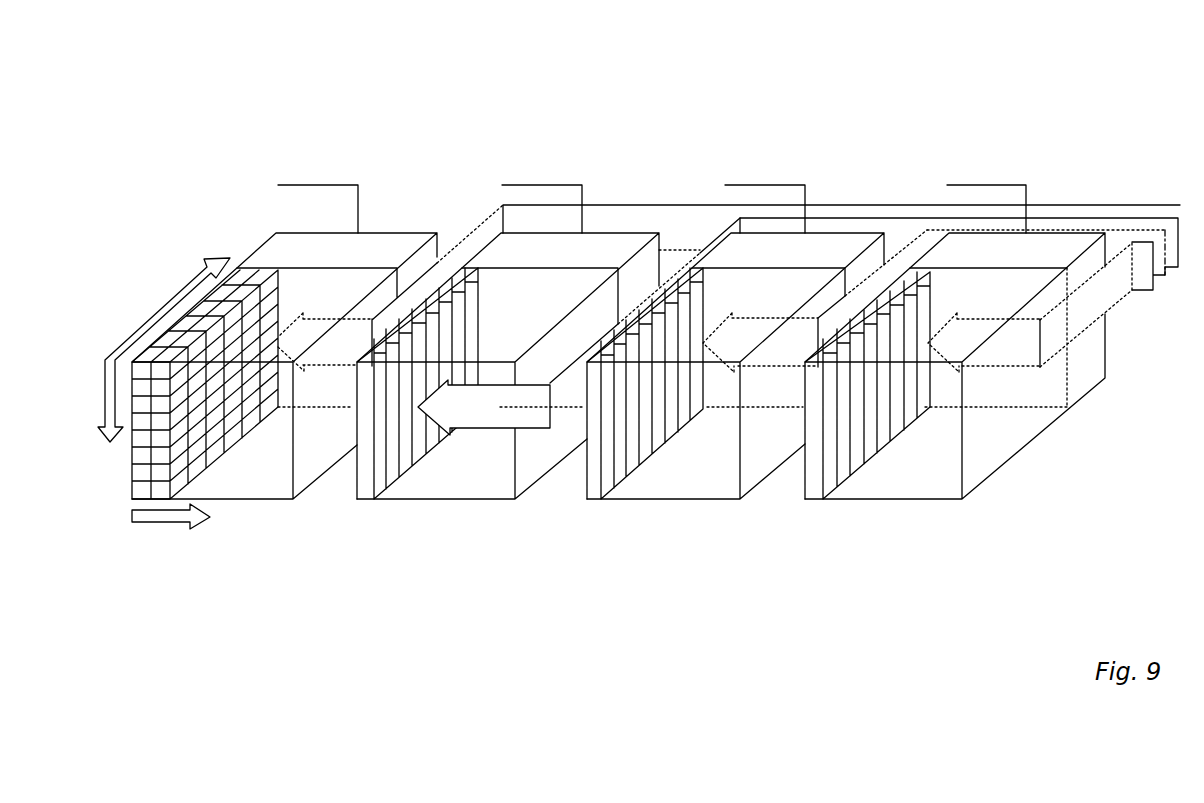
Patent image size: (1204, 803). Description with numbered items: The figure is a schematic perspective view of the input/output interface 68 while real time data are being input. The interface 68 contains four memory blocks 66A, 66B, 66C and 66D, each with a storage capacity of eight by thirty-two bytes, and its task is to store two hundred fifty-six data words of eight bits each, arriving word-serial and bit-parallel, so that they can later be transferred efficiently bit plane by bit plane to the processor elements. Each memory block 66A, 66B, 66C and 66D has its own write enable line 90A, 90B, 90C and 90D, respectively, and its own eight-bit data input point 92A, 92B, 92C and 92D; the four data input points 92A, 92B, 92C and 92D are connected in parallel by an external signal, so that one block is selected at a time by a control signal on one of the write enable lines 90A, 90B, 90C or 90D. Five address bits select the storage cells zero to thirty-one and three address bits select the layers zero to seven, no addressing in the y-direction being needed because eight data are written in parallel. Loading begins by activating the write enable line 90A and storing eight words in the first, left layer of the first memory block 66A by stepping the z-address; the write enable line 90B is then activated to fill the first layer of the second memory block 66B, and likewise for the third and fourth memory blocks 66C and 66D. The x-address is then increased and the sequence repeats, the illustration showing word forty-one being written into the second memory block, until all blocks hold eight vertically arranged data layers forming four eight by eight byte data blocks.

The first memory block 66A is at (356, 288).
The second memory block 66B is at (558, 288).
The third memory block 66C is at (797, 290).
The fourth memory block 66D is at (1030, 290).
The input/output interface 68 is at (631, 172).
The write enable line of first memory block 90A is at (353, 185).
The write enable line of second memory block 90B is at (582, 185).
The write enable line of third memory block 90C is at (806, 185).
The write enable line of fourth memory block 90D is at (1026, 185).
The first data input point 92A is at (338, 345).
The second data input point 92B is at (470, 410).
The third data input point 92C is at (782, 347).
The fourth data input point 92D is at (1010, 350).